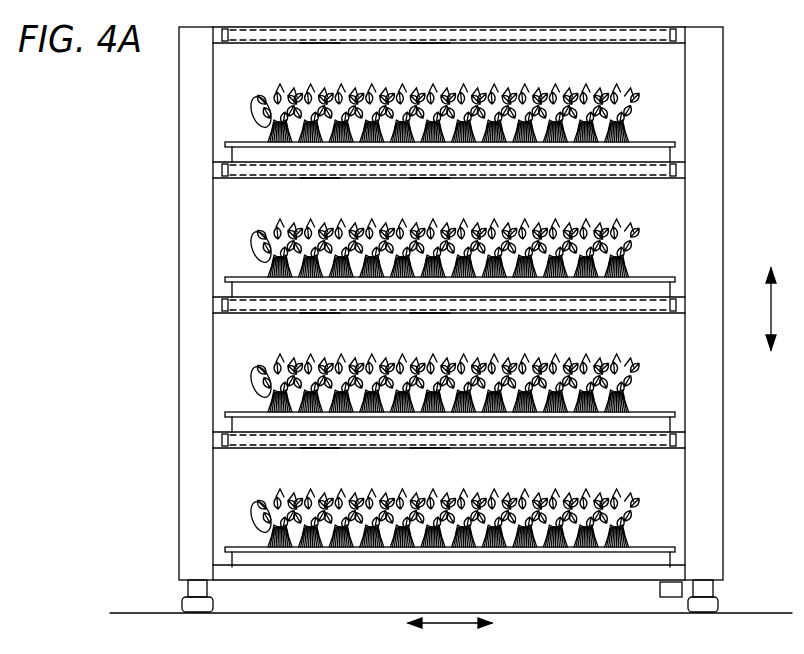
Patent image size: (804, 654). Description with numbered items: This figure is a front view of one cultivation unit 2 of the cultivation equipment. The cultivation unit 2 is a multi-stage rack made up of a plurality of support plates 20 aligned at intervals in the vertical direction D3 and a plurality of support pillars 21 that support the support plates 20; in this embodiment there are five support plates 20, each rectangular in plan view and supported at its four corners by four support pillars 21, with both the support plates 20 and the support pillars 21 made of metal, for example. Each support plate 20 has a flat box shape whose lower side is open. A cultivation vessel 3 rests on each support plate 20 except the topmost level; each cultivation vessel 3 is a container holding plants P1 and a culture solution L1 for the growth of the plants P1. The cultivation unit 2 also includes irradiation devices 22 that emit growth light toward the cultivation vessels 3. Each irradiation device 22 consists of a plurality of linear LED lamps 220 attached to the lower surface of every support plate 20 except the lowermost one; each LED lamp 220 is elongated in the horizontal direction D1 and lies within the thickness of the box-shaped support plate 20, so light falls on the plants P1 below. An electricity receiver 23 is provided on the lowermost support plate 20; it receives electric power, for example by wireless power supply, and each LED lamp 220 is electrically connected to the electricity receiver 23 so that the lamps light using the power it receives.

The cultivation unit 2 is at (447, 335).
The support pillar 21 is at (710, 186).
The support plate 20 is at (651, 35).
The irradiation device 22 is at (324, 43).
The LED lamp 220 is at (432, 43).
The electricity receiver 23 is at (670, 597).
The cultivation vessel 3 is at (246, 150).
The plants P1 is at (622, 130).
The culture solution L1 is at (575, 150).
The direction D1 is at (450, 636).
The direction D3 is at (784, 309).